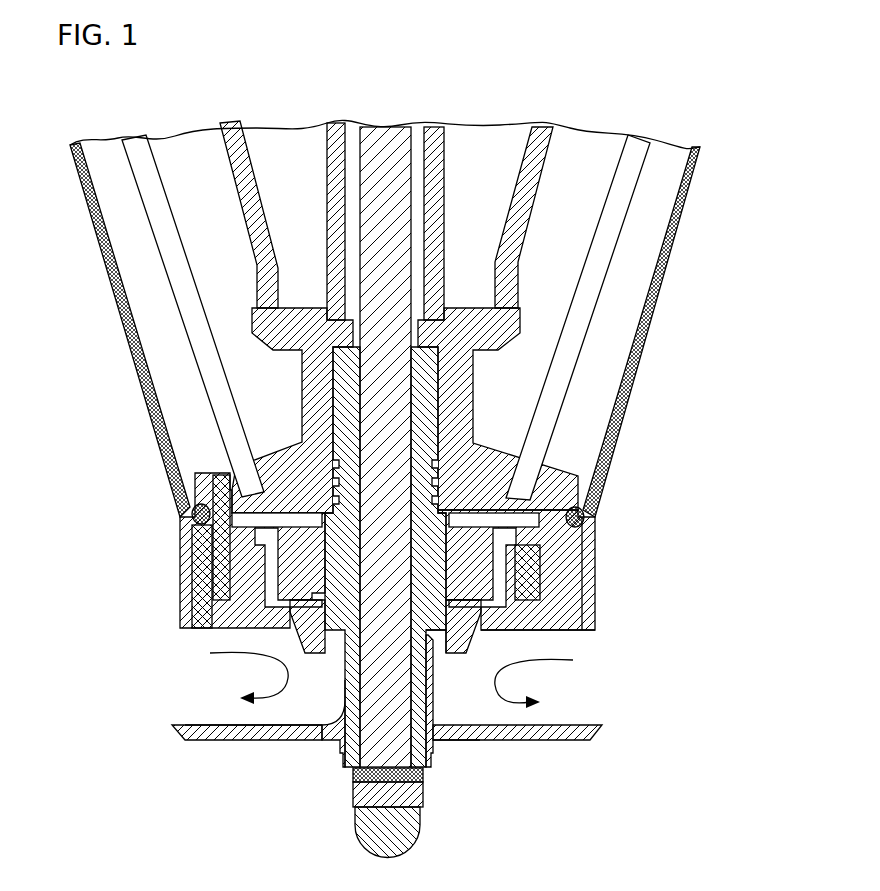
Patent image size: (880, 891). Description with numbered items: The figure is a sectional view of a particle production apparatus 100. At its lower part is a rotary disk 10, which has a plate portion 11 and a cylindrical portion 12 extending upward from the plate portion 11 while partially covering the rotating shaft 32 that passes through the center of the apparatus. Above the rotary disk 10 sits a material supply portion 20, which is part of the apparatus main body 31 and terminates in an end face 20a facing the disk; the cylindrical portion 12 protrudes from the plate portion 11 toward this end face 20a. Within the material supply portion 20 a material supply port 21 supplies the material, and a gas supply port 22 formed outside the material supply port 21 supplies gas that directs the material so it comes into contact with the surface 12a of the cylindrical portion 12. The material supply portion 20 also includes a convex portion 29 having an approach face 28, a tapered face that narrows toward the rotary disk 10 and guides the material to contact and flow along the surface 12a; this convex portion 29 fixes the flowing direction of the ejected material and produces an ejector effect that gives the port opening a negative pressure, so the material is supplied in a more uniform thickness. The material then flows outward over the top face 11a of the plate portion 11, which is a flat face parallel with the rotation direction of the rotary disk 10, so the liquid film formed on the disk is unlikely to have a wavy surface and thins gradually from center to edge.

The particle production apparatus 100 is at (762, 131).
The material supply portion 20 is at (663, 309).
The apparatus main body 31 is at (605, 562).
The rotating shaft 32 is at (388, 155).
The end face of material supply portion 20a is at (572, 633).
The material supply port 21 is at (326, 664).
The gas supply port 22 is at (310, 652).
The approach face 28 is at (452, 662).
The convex portion 29 is at (448, 672).
The rotary disk 10 is at (390, 720).
The plate portion 11 is at (566, 718).
The top face 11a is at (207, 722).
The cylindrical portion 12 is at (433, 695).
The surface of cylindrical portion 12a is at (462, 726).